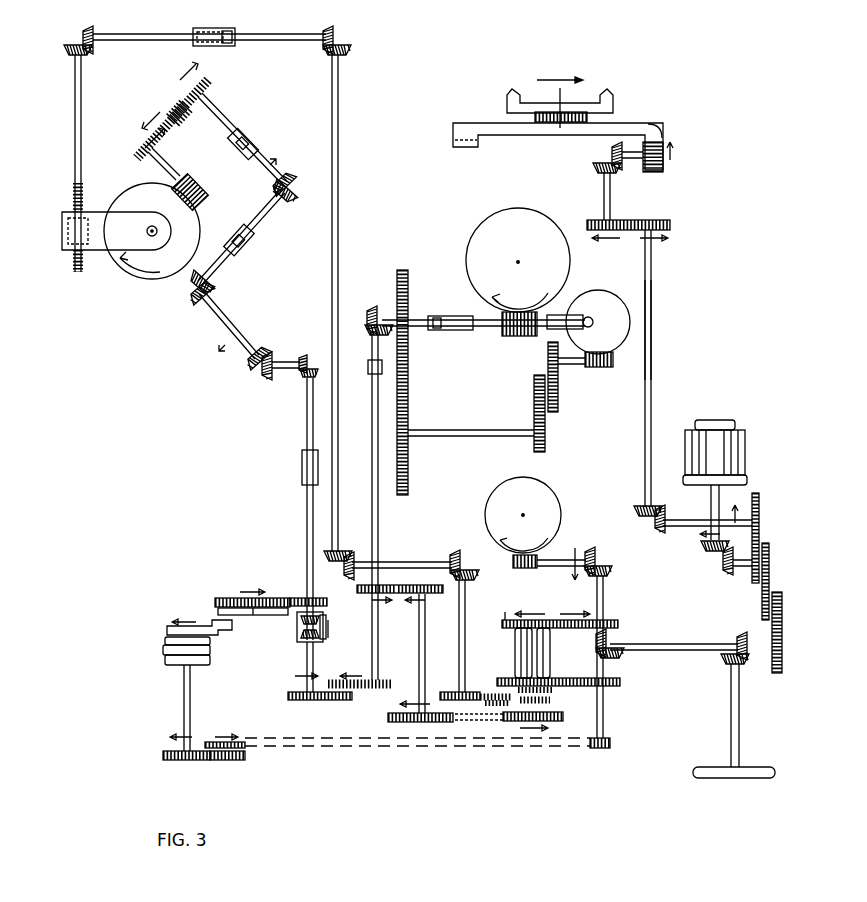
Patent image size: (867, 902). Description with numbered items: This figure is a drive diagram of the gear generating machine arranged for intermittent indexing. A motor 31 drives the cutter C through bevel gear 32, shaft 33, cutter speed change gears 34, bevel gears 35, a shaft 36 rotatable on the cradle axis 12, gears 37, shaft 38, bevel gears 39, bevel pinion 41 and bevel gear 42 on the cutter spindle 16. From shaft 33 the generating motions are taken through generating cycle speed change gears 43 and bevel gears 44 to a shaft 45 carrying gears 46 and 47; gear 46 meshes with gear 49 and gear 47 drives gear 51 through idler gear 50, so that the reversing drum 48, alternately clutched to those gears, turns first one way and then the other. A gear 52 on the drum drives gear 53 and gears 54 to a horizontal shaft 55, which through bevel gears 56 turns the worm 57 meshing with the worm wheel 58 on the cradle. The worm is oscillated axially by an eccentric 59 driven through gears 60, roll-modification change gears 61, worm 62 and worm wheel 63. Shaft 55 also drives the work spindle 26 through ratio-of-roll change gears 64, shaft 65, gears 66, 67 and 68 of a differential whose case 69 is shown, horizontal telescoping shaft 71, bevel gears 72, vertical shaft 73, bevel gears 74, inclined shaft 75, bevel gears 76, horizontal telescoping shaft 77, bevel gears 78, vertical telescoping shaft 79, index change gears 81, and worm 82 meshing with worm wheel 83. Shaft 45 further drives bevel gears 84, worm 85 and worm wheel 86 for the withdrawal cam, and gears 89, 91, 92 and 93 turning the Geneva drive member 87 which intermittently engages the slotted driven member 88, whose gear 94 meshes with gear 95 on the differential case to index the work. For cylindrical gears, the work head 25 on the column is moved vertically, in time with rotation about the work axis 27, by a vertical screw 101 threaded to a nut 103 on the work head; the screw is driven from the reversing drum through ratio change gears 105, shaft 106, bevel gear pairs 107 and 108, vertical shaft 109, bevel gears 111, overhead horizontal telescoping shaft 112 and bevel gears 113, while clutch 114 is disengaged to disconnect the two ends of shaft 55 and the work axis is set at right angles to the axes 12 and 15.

The cradle axis 12 is at (519, 261).
The axis 15 is at (555, 138).
The cutter spindle 16 is at (535, 117).
The cutter C is at (614, 102).
The work head 25 is at (107, 245).
The work spindle 26 is at (199, 225).
The work axis 27 is at (149, 226).
The motor 31 is at (720, 460).
The bevel gear 32 is at (712, 551).
The shaft 33 is at (731, 568).
The cutter speed change gears 34 is at (763, 555).
The bevel gears 35 is at (642, 518).
The shaft 36 is at (652, 290).
The gears 37 is at (628, 222).
The shaft 38 is at (602, 188).
The bevel gears 39 is at (605, 152).
The bevel pinion 41 is at (650, 172).
The bevel gear 42 is at (648, 125).
The generating cycle speed change gears 43 is at (778, 600).
The bevel gears 44 is at (608, 642).
The shaft 45 is at (605, 588).
The gear 46 is at (611, 686).
The gear 47 is at (606, 620).
The reversing drum 48 is at (518, 642).
The gear 49 is at (520, 662).
The idler gear 50 is at (564, 640).
The gear 51 is at (505, 612).
The gear 52 is at (565, 717).
The gear 53 is at (388, 718).
The gears 54 is at (415, 585).
The shaft 55 is at (380, 522).
The bevel gears 56 is at (368, 328).
The worm 57 is at (511, 337).
The worm wheel 58 is at (480, 258).
The eccentric 59 is at (592, 317).
The gears 60 is at (409, 375).
The roll-modification change gears 61 is at (547, 433).
The worm 62 is at (598, 368).
The worm wheel 63 is at (610, 352).
The ratio-of-roll change gears 64 is at (325, 700).
The shaft 65 is at (305, 684).
The gear of differential unit 66 is at (298, 640).
The gear of differential unit 67 is at (327, 630).
The gear of differential unit 68 is at (315, 616).
The differential case 69 is at (318, 642).
The horizontal telescoping shaft 71 is at (305, 521).
The bevel gears 72 is at (303, 376).
The vertical shaft 73 is at (285, 361).
The bevel gears 74 is at (258, 372).
The inclined shaft 75 is at (213, 310).
The bevel gears 76 is at (192, 292).
The horizontal telescoping shaft 77 is at (251, 236).
The bevel gears 78 is at (291, 179).
The vertical telescoping shaft 79 is at (224, 120).
The index change gears 81 is at (186, 116).
The worm 82 is at (172, 160).
The worm wheel 83 is at (138, 272).
The bevel gears 84 is at (600, 565).
The worm 85 is at (527, 568).
The worm wheel 86 is at (562, 520).
The rotary drive member 87 is at (219, 636).
The slotted rotary driven member 88 is at (258, 616).
The gear 89 is at (608, 748).
The gear 91 is at (243, 742).
The gear 92 is at (240, 761).
The gear 93 is at (176, 761).
The gear 94 is at (232, 600).
The gear 95 is at (300, 598).
The vertical screw 101 is at (73, 192).
The nut 103 is at (66, 228).
The ratio change gears 105 is at (494, 693).
The shaft 106 is at (461, 625).
The bevel gear pair 107 is at (459, 560).
The bevel gear pair 108 is at (330, 556).
The vertical shaft 109 is at (339, 210).
The bevel gears 111 is at (336, 38).
The overhead horizontal telescoping shaft 112 is at (235, 30).
The bevel gears 113 is at (82, 40).
The clutch 114 is at (371, 370).